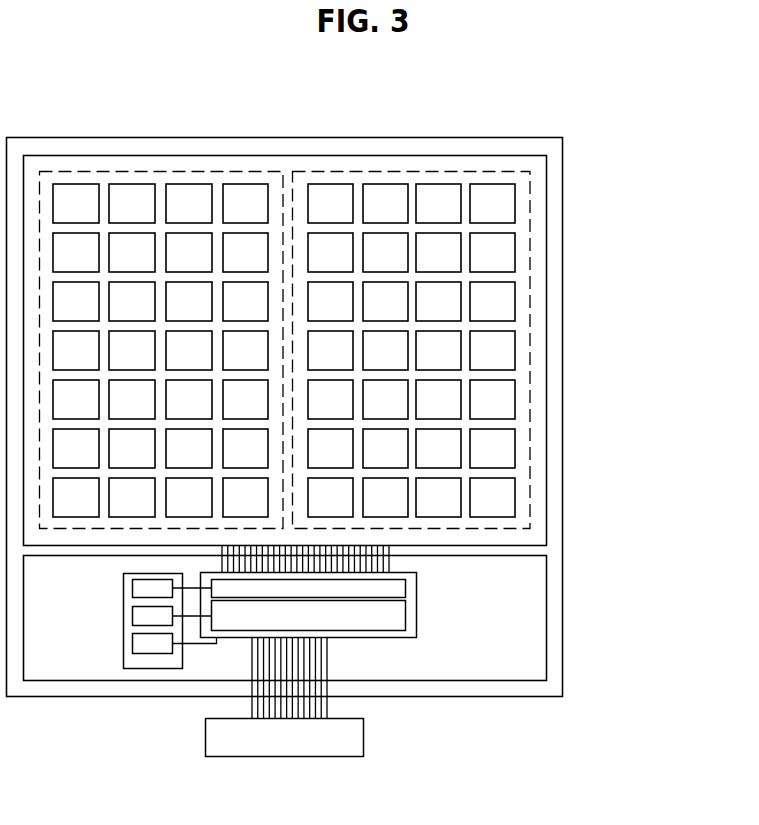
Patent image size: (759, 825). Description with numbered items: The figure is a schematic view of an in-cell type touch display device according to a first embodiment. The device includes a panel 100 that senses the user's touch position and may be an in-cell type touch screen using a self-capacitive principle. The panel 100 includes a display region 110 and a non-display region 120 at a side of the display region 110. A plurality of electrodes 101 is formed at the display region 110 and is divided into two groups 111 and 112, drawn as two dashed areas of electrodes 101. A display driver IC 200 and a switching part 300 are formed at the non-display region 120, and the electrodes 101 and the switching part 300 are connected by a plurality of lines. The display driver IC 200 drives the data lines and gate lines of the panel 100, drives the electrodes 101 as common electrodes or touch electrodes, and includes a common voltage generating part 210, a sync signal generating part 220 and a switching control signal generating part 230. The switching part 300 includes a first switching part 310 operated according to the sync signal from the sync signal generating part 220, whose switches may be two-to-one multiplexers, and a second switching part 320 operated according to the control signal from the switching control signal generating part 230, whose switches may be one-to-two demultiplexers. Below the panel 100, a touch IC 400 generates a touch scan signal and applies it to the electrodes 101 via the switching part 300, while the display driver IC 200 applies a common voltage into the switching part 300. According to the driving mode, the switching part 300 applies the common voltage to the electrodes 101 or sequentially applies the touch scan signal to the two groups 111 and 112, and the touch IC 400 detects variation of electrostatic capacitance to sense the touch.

The panel 100 is at (564, 183).
The electrodes 101 is at (518, 301).
The display region 110 is at (548, 440).
The first group of electrodes 111 is at (162, 171).
The second group of electrodes 112 is at (386, 171).
The non-display region 120 is at (548, 637).
The display driver IC 200 is at (123, 575).
The common voltage generating part 210 is at (132, 642).
The sync signal generating part 220 is at (132, 614).
The switching control signal generating part 230 is at (132, 587).
The switching part 300 is at (416, 577).
The first switching part 310 is at (406, 617).
The second switching part 320 is at (406, 588).
The touch IC 400 is at (364, 738).